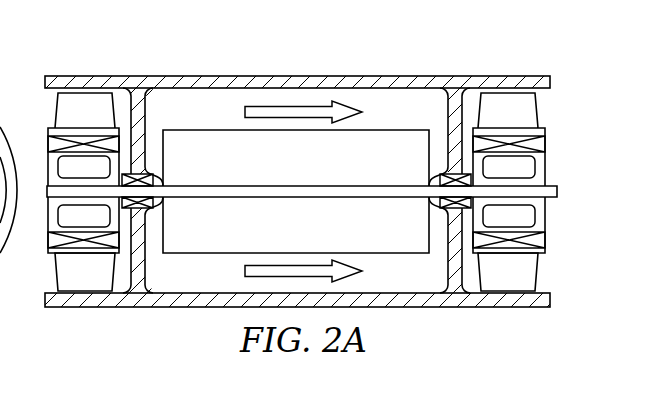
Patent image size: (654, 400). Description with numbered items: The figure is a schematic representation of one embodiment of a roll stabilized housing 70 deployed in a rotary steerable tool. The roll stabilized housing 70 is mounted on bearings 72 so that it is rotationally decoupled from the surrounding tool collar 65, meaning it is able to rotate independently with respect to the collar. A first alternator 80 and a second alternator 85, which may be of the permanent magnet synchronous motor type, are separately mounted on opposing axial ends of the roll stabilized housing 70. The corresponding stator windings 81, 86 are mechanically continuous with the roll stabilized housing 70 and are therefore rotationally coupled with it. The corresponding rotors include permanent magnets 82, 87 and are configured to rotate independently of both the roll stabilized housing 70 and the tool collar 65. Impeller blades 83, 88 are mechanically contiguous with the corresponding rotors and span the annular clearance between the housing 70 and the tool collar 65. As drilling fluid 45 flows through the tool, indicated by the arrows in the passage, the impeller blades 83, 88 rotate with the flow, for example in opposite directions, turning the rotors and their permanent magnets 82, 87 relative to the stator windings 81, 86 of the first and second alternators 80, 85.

The drilling fluid 45 is at (267, 119).
The tool collar 65 is at (400, 76).
The roll stabilized housing 70 is at (307, 203).
The bearings 72 is at (150, 165).
The first alternator 80 is at (122, 66).
The stator windings 81 is at (66, 218).
The permanent magnets 82 is at (66, 122).
The impeller blades 83 is at (84, 275).
The second alternator 85 is at (548, 66).
The stator windings 86 is at (530, 213).
The permanent magnets 87 is at (532, 123).
The impeller blades 88 is at (513, 275).